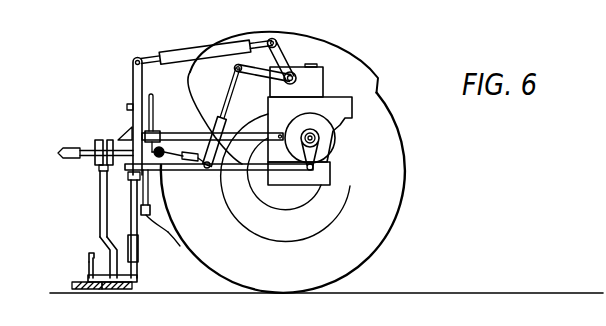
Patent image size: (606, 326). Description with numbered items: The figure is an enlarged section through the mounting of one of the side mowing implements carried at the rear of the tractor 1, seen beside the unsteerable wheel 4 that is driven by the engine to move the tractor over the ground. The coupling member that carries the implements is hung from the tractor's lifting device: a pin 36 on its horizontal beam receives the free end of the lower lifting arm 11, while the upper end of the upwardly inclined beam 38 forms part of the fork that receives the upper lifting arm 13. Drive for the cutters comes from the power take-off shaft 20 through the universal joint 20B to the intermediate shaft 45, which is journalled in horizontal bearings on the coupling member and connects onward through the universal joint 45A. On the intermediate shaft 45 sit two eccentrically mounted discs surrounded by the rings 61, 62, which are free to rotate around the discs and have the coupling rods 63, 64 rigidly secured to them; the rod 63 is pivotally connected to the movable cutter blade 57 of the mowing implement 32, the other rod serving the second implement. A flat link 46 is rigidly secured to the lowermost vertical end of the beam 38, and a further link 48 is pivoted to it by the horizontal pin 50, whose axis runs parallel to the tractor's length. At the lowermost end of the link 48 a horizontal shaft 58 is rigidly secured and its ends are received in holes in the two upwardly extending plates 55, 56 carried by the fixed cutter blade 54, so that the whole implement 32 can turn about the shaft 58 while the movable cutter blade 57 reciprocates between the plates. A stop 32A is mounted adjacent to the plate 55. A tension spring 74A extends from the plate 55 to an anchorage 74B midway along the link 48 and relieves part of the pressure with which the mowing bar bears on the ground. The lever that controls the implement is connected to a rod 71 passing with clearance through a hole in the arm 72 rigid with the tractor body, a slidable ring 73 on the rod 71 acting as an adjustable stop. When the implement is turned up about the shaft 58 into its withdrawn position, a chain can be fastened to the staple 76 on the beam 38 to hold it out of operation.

The tractor 1 is at (331, 92).
The unsteerable wheel 4 is at (362, 252).
The lower lifting arm 11 is at (290, 172).
The upper lifting arm 13 is at (200, 52).
The power take-off shaft 20 is at (210, 171).
The universal joint 20B is at (158, 171).
The mowing implement 32 is at (74, 283).
The stop 32A is at (135, 264).
The pin 36 is at (140, 207).
The upwardly inclined beam 38 is at (133, 84).
The intermediate shaft 45 is at (88, 155).
The universal joint 45A is at (73, 150).
The flat link 46 is at (128, 178).
The link 48 is at (141, 210).
The horizontal pin 50 is at (131, 194).
The fixed cutter blade 54 is at (123, 290).
The plate 55 is at (138, 277).
The plate 56 is at (91, 252).
The movable cutter blade 57 is at (105, 290).
The horizontal shaft 58 is at (88, 269).
The ring 61 is at (97, 141).
The ring 62 is at (110, 140).
The coupling rod 63 is at (100, 190).
The coupling rod 64 is at (100, 169).
The rod 71 is at (151, 97).
The arm 72 is at (163, 138).
The ring 73 is at (161, 140).
The tension spring 74A is at (180, 243).
The anchorage 74B is at (168, 228).
The staple 76 is at (128, 104).